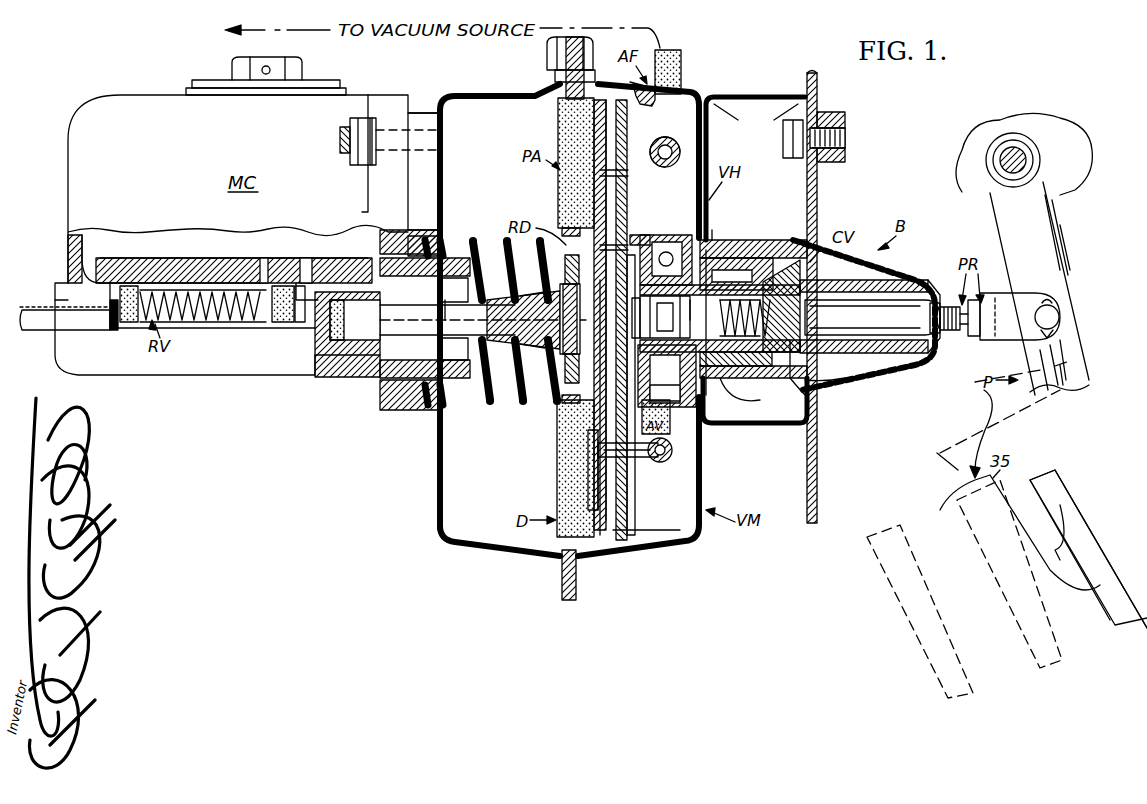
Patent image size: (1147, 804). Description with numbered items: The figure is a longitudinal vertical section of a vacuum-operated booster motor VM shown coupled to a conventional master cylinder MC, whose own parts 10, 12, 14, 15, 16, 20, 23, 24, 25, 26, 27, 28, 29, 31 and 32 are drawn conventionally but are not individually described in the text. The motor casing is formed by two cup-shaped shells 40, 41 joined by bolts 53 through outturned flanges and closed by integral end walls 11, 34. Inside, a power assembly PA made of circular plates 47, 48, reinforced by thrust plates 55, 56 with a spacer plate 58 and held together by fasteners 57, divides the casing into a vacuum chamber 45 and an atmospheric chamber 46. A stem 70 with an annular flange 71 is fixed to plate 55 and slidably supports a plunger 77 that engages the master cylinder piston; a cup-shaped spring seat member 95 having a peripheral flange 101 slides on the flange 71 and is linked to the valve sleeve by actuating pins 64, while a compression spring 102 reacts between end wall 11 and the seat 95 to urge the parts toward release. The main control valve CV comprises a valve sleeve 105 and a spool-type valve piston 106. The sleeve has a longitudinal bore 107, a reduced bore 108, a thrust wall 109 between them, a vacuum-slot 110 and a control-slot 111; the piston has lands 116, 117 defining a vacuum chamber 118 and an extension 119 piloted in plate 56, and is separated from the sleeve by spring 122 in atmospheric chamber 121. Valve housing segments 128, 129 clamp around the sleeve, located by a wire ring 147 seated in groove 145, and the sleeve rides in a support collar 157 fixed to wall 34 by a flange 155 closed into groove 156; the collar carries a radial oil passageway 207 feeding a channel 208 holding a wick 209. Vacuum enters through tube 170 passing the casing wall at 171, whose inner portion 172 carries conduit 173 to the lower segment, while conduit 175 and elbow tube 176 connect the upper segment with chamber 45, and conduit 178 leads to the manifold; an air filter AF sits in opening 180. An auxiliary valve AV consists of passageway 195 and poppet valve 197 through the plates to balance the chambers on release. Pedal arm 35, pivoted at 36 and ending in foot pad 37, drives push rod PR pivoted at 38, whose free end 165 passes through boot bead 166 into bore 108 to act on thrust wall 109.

The master cylinder mounting flange 10 is at (385, 102).
The forward end wall 11 is at (440, 454).
The mounting flange 12 is at (424, 112).
The bolt 14 is at (343, 132).
The bolt shank 15 is at (388, 132).
The nut 16 is at (368, 160).
The housing 20 is at (322, 345).
The output push rod 23 is at (55, 314).
The bore 24 is at (210, 262).
The return spring 25 is at (222, 322).
The reservoir 26 is at (150, 252).
The compensating port 27 is at (264, 270).
The intake port 28 is at (308, 272).
The passage 29 is at (308, 296).
The piston seal 31 is at (280, 322).
The piston 32 is at (410, 303).
The rear end wall 34 is at (720, 478).
The pedal arm 35 is at (1082, 385).
The pedal pivot 36 is at (1026, 150).
The foot pad 37 is at (1060, 490).
The push-rod pivotal connection 38 is at (1058, 312).
The cup-shaped shell 40 is at (505, 547).
The cup-shaped shell 41 is at (662, 548).
The variable pressure chamber 45 is at (500, 471).
The constant pressure chamber 46 is at (682, 509).
The circular plate 47 is at (598, 500).
The circular plate 48 is at (665, 514).
The bolts 53 is at (546, 62).
The thrust plate 55 is at (575, 140).
The thrust plate 56 is at (615, 190).
The fastener 57 is at (572, 226).
The spacer plate 58 is at (592, 200).
The actuating pins 64 is at (696, 230).
The pilot stem 70 is at (512, 306).
The annular flange 71 is at (580, 352).
The plunger 77 is at (446, 325).
The spring seat member 95 is at (578, 228).
The peripheral flange 101 is at (560, 405).
The compression spring 102 is at (490, 404).
The valve sleeve 105 is at (850, 370).
The valve piston 106 is at (665, 317).
The longitudinal bore 107 is at (753, 385).
The reduced coaxial bore 108 is at (880, 352).
The thrust wall 109 is at (830, 270).
The vacuum-slot 110 is at (665, 388).
The control-slot 111 is at (722, 240).
The annular land 116 is at (666, 260).
The working land 117 is at (736, 364).
The vacuum chamber 118 is at (668, 345).
The cylindrical extension 119 is at (650, 316).
The atmospheric chamber 121 is at (786, 306).
The compression spring 122 is at (812, 352).
The valve housing segment 128 is at (696, 218).
The valve housing segment 129 is at (678, 410).
The semicircular internal groove 145 is at (734, 262).
The split retainer ring 147 is at (712, 432).
The outturned circular flange 155 is at (770, 410).
The external annular groove 156 is at (735, 410).
The support collar 157 is at (820, 378).
The push rod free end 165 is at (976, 336).
The reduced diameter bead 166 is at (945, 332).
The vacuum-inlet tube 170 is at (643, 141).
The casing wall opening 171 is at (671, 138).
The inner projecting portion 172 is at (657, 165).
The flexible conduit 173 is at (680, 152).
The flexible conduit 175 is at (666, 462).
The elbow-type tube 176 is at (636, 457).
The flexible conduit 178 is at (682, 66).
The filter opening 180 is at (676, 88).
The longitudinal passageway 195 is at (592, 400).
The poppet valve element 197 is at (594, 440).
The radial passageway 207 is at (743, 272).
The internal annular channel 208 is at (770, 262).
The ring-type wick 209 is at (775, 272).